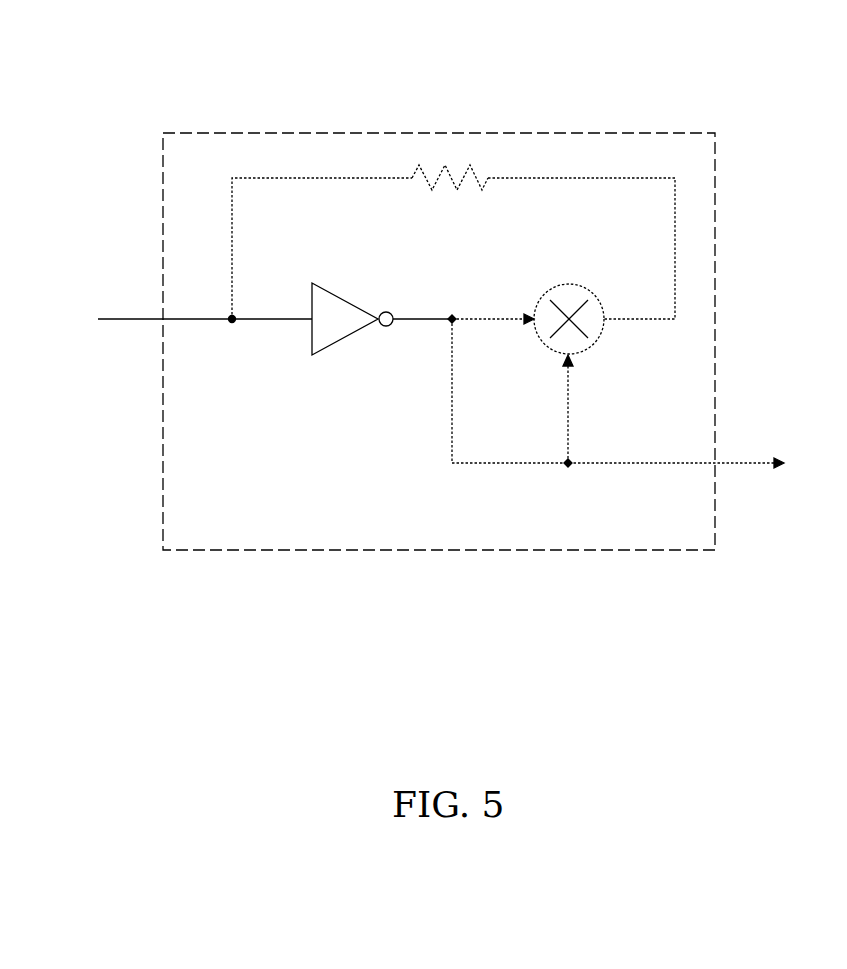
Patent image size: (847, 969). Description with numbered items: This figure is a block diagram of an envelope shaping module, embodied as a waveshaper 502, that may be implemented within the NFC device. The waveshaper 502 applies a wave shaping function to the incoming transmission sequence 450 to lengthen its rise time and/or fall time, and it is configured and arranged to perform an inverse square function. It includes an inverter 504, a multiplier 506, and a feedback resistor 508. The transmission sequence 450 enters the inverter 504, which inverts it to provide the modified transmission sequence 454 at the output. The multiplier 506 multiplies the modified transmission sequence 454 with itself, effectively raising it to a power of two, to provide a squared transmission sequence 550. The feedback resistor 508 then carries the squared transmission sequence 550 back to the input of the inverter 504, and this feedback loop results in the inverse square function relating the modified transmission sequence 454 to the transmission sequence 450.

The waveshaper 502 is at (680, 131).
The transmission sequence 450 is at (185, 318).
The inverter 504 is at (346, 341).
The multiplier 506 is at (571, 284).
The feedback resistor 508 is at (452, 150).
The squared transmission sequence 550 is at (510, 176).
The modified transmission sequence 454 is at (638, 395).